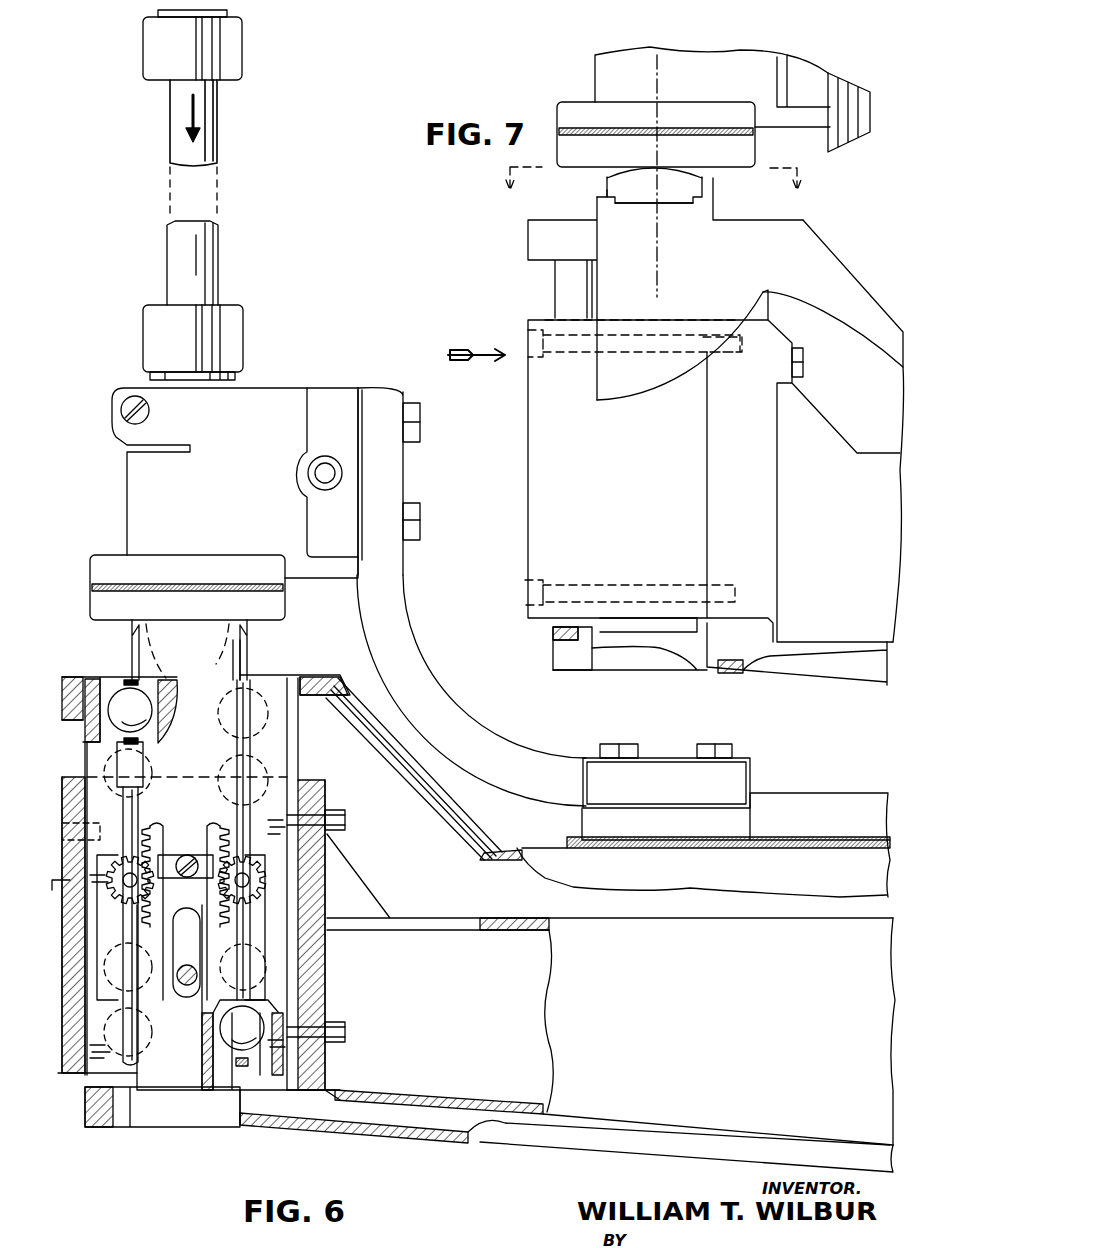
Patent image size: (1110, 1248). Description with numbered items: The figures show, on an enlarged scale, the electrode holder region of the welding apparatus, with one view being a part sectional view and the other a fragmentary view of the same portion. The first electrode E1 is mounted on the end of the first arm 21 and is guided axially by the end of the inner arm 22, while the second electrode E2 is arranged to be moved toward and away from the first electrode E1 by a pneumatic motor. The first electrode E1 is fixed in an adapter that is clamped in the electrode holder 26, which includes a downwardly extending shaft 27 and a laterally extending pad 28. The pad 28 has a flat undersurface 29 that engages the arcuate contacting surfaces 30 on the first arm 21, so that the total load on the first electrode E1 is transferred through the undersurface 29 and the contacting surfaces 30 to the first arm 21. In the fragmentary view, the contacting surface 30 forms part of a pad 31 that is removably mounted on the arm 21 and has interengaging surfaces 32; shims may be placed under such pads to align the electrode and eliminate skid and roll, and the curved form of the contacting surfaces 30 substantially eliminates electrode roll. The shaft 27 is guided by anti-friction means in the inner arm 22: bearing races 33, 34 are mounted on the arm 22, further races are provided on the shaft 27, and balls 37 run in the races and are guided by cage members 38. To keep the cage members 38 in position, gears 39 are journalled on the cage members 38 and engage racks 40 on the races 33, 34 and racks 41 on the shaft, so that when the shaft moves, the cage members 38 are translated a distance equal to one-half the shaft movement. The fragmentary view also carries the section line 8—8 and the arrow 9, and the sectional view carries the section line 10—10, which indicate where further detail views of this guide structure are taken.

In FIG. 6, the first electrode E1 is at (218, 242).
In FIG. 6, the second electrode E2 is at (222, 140).
In FIG. 7, the section line 8— 8 is at (655, 189).
In FIG. 7, the arrow 9 is at (476, 373).
In FIG. 6, the section line 10— 10 is at (180, 880).
In FIG. 6, the first arm 21 is at (490, 1128).
In FIG. 7, the first arm 21 is at (813, 240).
In FIG. 6, the inner arm 22 is at (400, 1105).
In FIG. 7, the inner arm 22 is at (868, 463).
In FIG. 6, the electrode holder 26 is at (143, 495).
In FIG. 7, the electrode holder 26 is at (732, 172).
In FIG. 6, the shaft 27 is at (224, 663).
In FIG. 6, the pad 28 is at (105, 600).
In FIG. 7, the pad 28 is at (656, 134).
In FIG. 6, the flat undersurface 29 is at (105, 620).
In FIG. 7, the flat undersurface 29 is at (723, 173).
In FIG. 6, the arcuate contacting surfaces 30 is at (187, 651).
In FIG. 7, the arcuate contacting surfaces 30 is at (602, 183).
In FIG. 7, the pad 31 is at (605, 188).
In FIG. 7, the interengaging surfaces 32 is at (632, 208).
In FIG. 6, the bearing race 33 is at (88, 757).
In FIG. 6, the bearing race 34 is at (283, 753).
In FIG. 6, the balls 37 is at (113, 680).
In FIG. 6, the cage members 38 is at (120, 1067).
In FIG. 6, the gears 39 is at (186, 997).
In FIG. 6, the racks 40 is at (92, 920).
In FIG. 6, the racks 41 is at (207, 835).